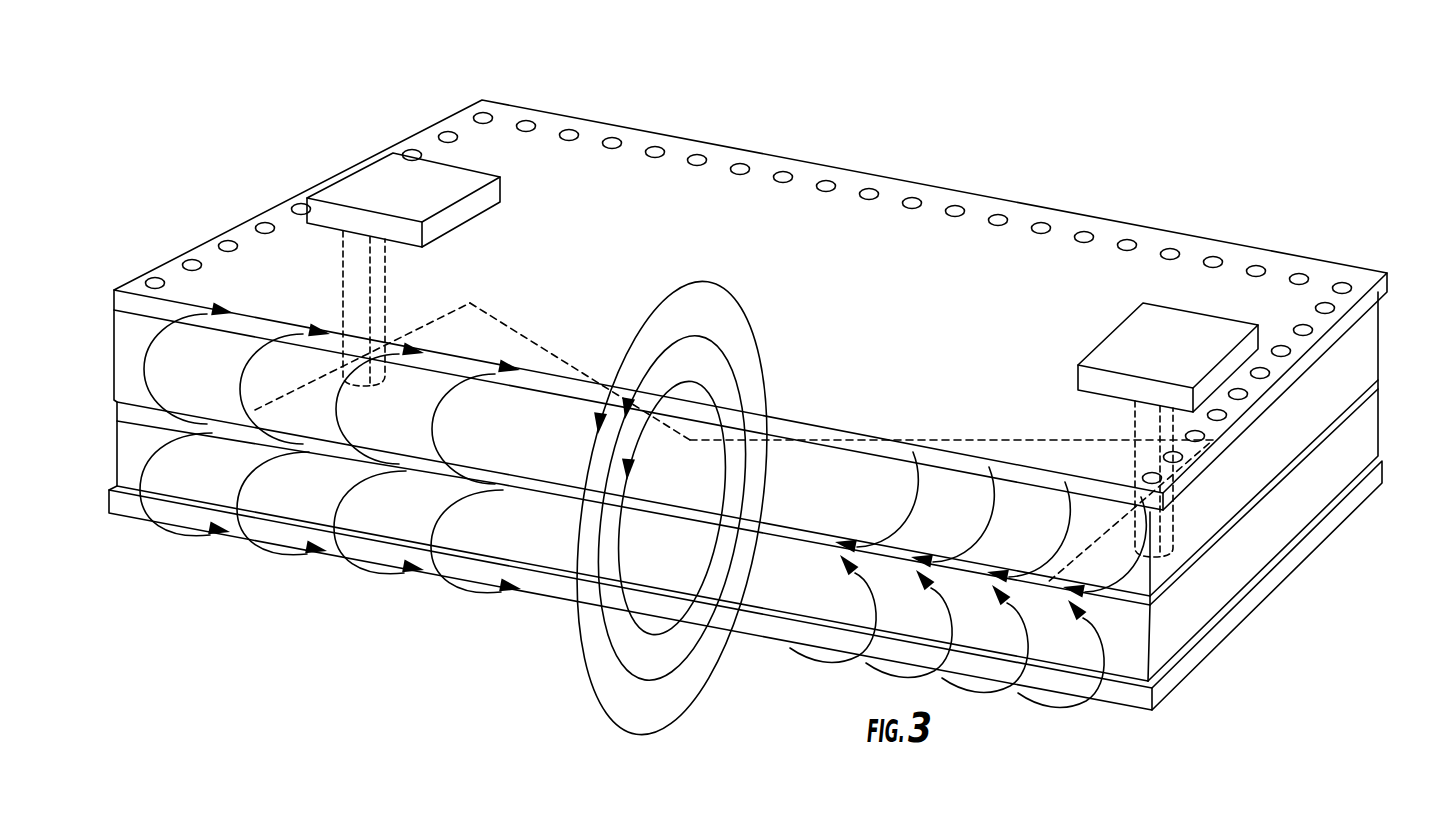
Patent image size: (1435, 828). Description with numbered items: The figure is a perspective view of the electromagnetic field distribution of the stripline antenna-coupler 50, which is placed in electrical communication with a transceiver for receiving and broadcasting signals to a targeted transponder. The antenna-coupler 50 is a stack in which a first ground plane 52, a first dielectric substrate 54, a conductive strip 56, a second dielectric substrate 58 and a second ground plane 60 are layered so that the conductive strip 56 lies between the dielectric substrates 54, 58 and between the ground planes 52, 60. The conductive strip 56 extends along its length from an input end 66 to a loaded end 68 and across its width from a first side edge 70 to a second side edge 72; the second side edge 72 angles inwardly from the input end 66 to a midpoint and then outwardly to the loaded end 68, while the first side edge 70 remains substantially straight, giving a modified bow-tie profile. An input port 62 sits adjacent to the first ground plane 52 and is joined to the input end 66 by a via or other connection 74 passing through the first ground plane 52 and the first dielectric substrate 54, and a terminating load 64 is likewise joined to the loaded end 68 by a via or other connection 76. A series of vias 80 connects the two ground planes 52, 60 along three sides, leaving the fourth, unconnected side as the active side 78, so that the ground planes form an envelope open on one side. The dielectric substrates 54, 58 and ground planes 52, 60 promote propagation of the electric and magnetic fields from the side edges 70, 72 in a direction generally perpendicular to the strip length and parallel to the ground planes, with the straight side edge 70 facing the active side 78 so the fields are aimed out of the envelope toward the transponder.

The stripline antenna-coupler 50 is at (303, 72).
The first ground plane 52 is at (935, 197).
The first dielectric substrate 54 is at (1368, 352).
The conductive strip 56 is at (485, 365).
The second dielectric substrate 58 is at (1368, 428).
The second ground plane 60 is at (1365, 483).
The input port 62 is at (374, 190).
The terminating load 64 is at (1175, 338).
The input end 66 is at (293, 390).
The loaded end 68 is at (1077, 555).
The first side edge 70 is at (785, 535).
The second side edge 72 is at (547, 352).
The via or other connection 74 is at (358, 263).
The via or other connection 76 is at (1170, 425).
The active side 78 is at (350, 600).
The vias 80 is at (452, 133).